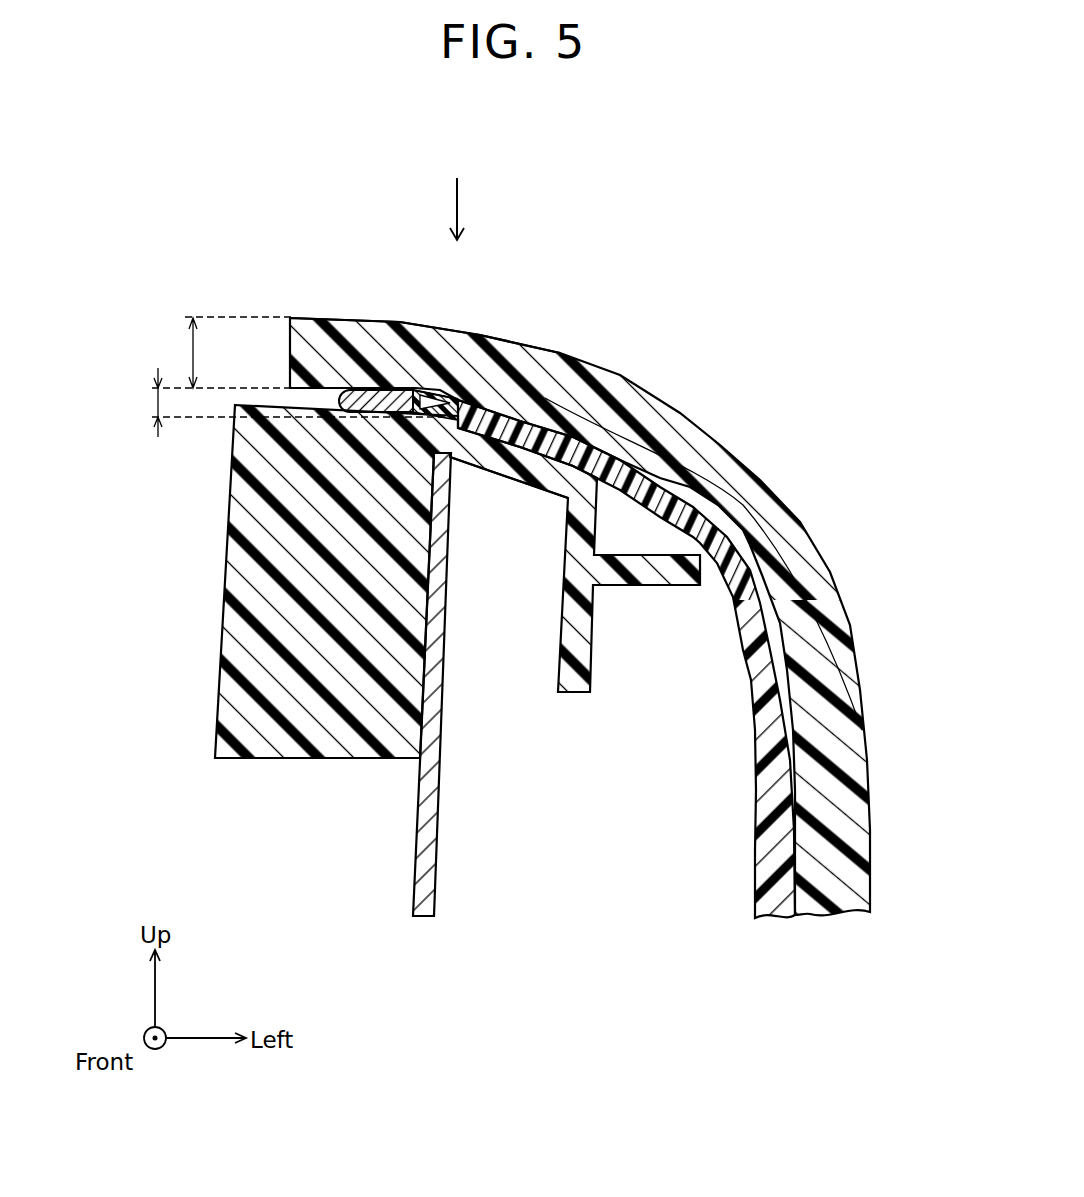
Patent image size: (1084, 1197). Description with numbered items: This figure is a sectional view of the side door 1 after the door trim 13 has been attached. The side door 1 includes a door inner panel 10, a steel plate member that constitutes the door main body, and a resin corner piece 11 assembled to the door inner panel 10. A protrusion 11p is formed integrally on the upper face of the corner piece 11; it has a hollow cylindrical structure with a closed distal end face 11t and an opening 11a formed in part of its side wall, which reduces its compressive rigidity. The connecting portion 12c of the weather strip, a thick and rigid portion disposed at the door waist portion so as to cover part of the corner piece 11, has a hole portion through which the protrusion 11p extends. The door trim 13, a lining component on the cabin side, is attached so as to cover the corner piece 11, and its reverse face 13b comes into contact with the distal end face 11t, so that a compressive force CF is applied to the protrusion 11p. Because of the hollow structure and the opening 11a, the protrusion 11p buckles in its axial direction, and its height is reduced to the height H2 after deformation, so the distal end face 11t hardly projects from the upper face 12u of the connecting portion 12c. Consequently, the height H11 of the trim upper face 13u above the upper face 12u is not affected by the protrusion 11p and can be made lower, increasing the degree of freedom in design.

The side door 1 is at (519, 568).
The door inner panel 10 is at (420, 838).
The corner piece 11 is at (235, 568).
The opening 11a is at (462, 398).
The protrusion 11p is at (417, 377).
The distal end face 11t is at (420, 392).
The connecting portion 12c is at (745, 527).
The upper face 12u is at (370, 390).
The door trim 13 is at (720, 463).
The reverse face 13b is at (607, 393).
The trim upper face 13u is at (303, 318).
The compressive force CF is at (462, 202).
The height H11 is at (193, 352).
The height H2 is at (158, 404).